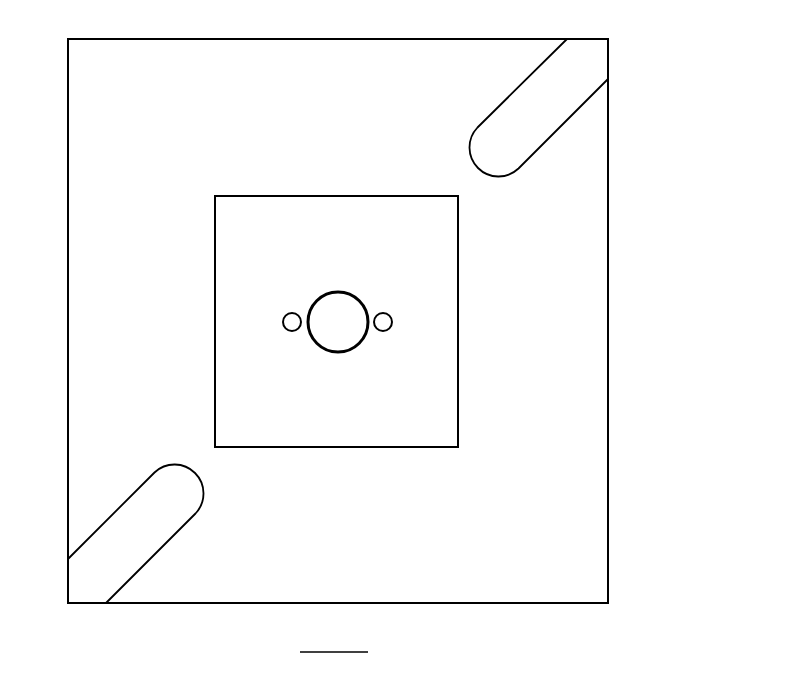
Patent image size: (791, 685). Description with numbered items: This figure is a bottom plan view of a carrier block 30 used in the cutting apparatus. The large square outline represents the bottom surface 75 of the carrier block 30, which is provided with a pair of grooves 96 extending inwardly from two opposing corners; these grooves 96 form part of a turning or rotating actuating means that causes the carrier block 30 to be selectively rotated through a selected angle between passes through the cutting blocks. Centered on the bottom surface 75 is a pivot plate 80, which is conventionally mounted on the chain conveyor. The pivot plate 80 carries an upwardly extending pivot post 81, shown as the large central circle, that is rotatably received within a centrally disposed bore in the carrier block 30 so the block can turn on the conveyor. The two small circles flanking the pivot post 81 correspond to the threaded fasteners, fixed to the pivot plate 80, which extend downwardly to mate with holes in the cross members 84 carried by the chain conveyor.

The carrier block 30 is at (636, 214).
The bottom surface 75 is at (568, 522).
The grooves 96 is at (568, 124).
The pivot plate 80 is at (343, 448).
The pivot post 81 is at (345, 312).
The cross members 84 is at (285, 332).